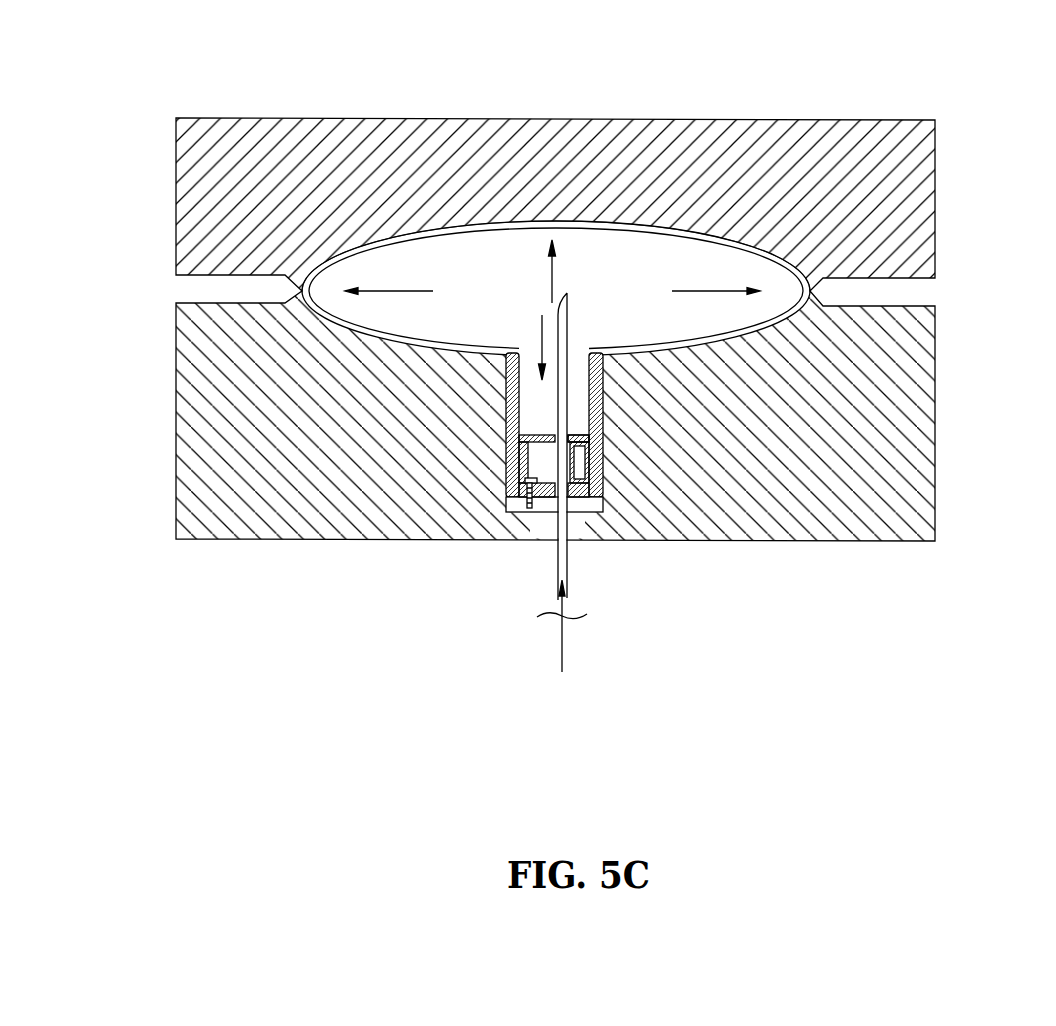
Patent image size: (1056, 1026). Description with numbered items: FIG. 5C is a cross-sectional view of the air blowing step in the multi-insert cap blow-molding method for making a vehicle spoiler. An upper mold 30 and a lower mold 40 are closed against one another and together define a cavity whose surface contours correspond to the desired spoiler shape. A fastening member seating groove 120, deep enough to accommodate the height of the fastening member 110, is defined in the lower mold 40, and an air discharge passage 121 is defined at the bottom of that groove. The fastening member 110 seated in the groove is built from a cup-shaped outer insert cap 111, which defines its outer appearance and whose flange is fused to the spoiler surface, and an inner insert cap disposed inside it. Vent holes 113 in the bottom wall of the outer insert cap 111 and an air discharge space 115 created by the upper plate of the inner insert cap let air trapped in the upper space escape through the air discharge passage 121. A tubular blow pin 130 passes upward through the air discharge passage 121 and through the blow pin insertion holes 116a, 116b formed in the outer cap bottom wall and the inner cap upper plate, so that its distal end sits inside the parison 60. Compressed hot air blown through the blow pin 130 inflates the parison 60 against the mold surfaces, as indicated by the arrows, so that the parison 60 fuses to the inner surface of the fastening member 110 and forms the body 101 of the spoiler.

The upper mold 30 is at (910, 203).
The lower mold 40 is at (910, 383).
The parison 60 is at (556, 216).
The body 101 is at (572, 222).
The fastening member 110 is at (504, 428).
The outer insert cap 111 is at (588, 441).
The vent holes 113 is at (592, 512).
The air discharge space 115 is at (518, 465).
The blow pin insertion hole 116a is at (574, 487).
The blow pin insertion hole 116b is at (584, 436).
The fastening member seating groove 120 is at (603, 508).
The air discharge passage 121 is at (548, 528).
The blow pin 130 is at (557, 565).